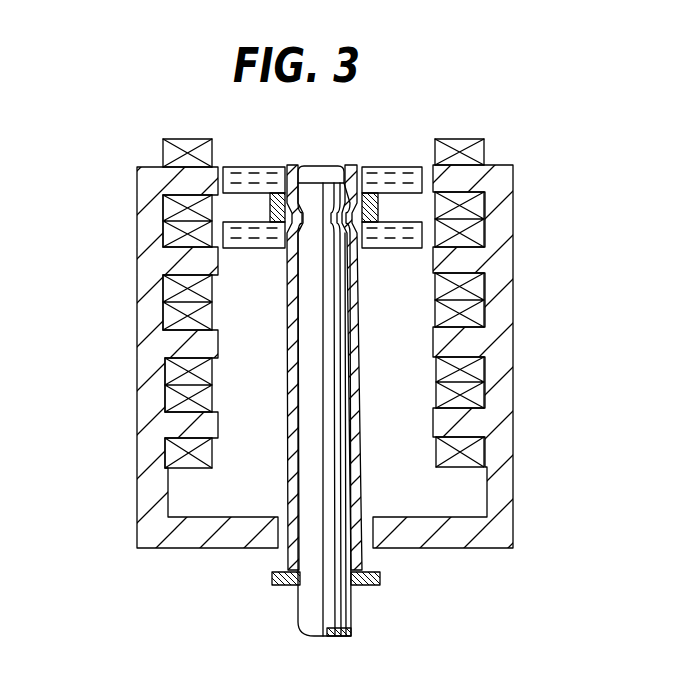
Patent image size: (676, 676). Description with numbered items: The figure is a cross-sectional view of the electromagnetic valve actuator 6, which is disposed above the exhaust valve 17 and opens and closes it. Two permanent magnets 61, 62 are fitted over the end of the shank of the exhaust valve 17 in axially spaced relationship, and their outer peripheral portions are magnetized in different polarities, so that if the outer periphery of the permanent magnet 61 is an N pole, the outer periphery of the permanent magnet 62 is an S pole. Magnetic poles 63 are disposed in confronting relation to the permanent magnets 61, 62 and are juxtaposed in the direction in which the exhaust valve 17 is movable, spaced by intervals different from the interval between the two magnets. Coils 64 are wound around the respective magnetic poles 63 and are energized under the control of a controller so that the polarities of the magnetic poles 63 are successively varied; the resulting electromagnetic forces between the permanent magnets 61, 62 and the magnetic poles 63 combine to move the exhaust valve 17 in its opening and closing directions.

The electromagnetic valve actuator 6 is at (269, 329).
The exhaust valve 17 is at (338, 590).
The permanent magnet 61 is at (248, 172).
The permanent magnet 62 is at (235, 240).
The magnetic poles 63 is at (446, 180).
The coils 64 is at (477, 150).